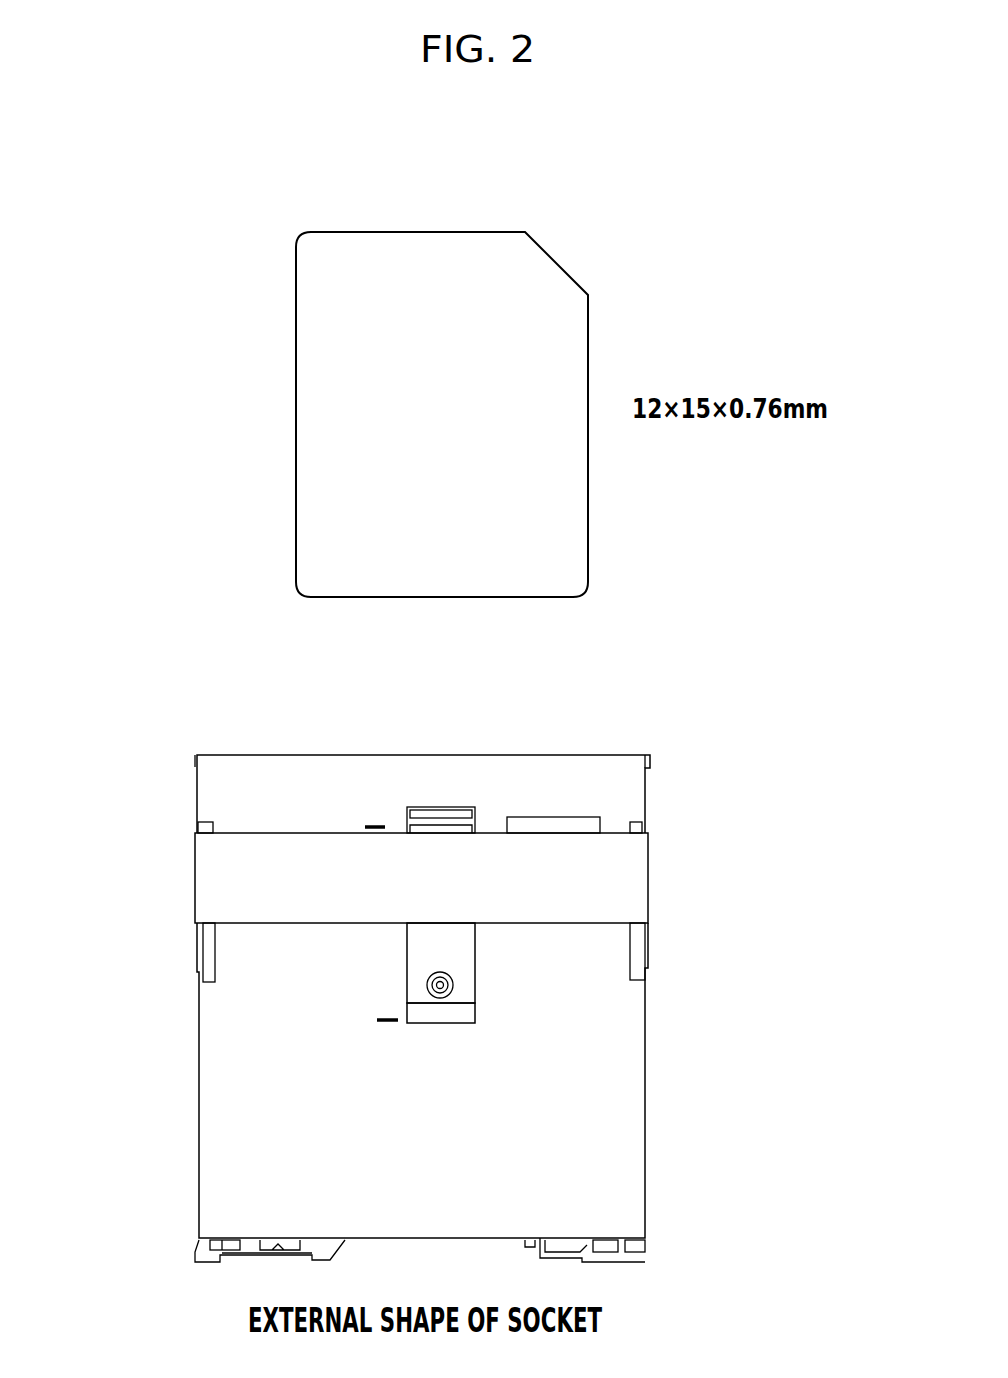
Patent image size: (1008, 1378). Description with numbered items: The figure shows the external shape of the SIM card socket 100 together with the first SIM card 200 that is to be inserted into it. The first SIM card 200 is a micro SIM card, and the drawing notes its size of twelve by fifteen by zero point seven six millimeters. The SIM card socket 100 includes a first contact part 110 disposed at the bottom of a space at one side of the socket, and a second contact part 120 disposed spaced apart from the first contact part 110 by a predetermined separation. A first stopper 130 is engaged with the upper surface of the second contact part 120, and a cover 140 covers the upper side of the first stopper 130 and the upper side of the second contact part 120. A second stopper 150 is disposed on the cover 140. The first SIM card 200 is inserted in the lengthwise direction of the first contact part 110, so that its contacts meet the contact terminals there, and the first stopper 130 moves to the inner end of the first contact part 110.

The SIM card socket 100 is at (200, 733).
The first contact part 110 is at (632, 1247).
The second contact part 120 is at (452, 1013).
The first stopper 130 is at (457, 952).
The cover 140 is at (218, 1127).
The second stopper 150 is at (217, 882).
The first SIM card 200 is at (522, 290).